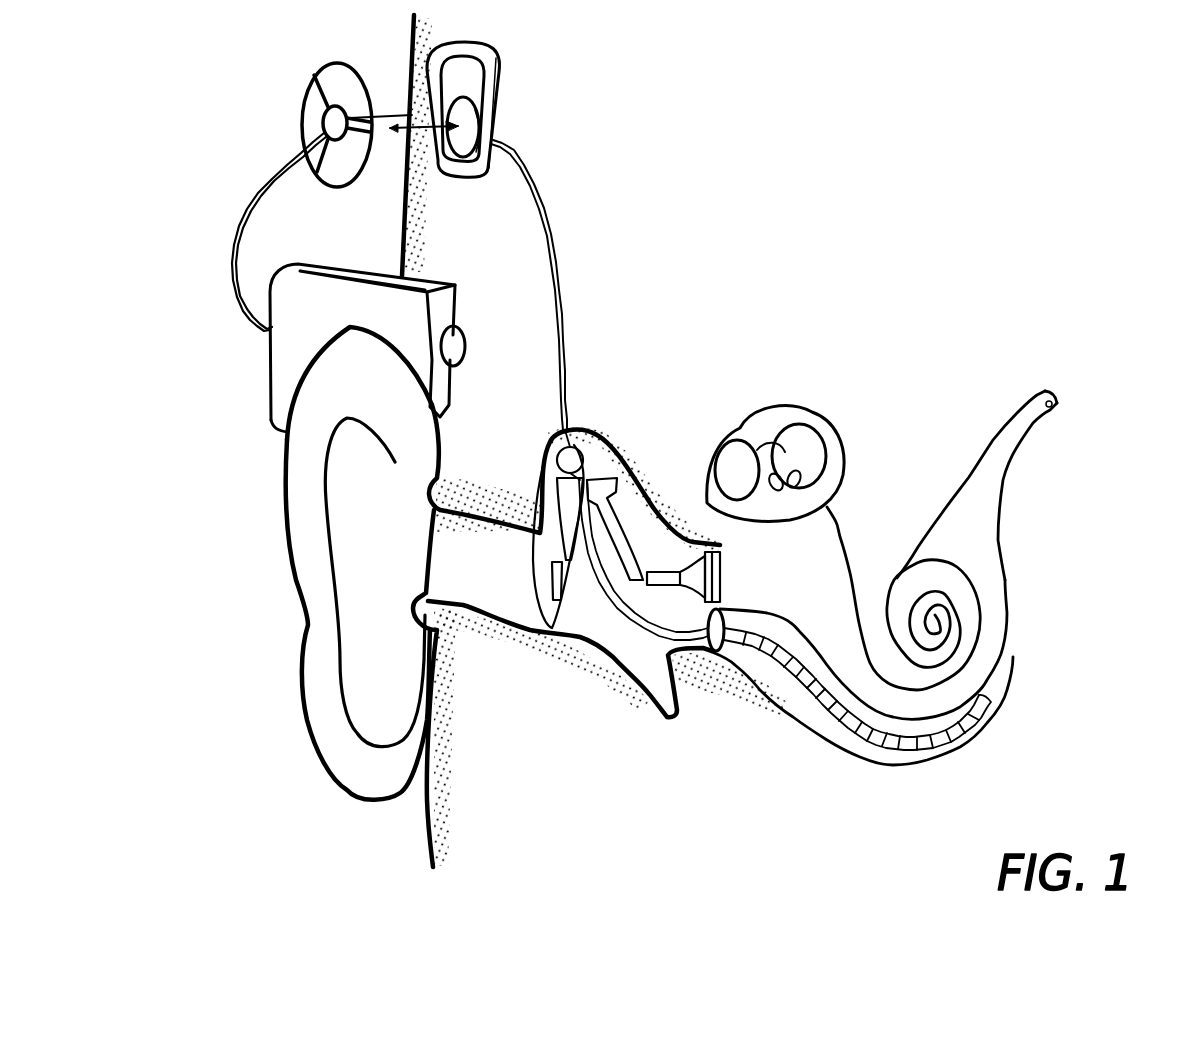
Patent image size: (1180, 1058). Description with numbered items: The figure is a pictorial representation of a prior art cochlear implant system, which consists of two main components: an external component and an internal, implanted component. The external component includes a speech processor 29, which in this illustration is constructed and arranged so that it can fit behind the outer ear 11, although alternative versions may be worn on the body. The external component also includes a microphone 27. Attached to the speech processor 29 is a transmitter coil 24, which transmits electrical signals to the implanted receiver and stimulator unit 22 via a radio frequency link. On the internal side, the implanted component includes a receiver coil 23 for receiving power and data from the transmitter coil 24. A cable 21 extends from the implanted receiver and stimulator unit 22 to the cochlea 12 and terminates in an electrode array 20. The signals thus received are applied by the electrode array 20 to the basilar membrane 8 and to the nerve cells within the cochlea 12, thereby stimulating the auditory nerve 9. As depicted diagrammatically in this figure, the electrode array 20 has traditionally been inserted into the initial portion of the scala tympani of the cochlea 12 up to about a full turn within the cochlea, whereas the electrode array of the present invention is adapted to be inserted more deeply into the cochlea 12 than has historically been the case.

The basilar membrane 8 is at (799, 630).
The auditory nerve 9 is at (982, 488).
The outer ear 11 is at (317, 690).
The cochlea 12 is at (1003, 643).
The electrode array 20 is at (848, 730).
The cable 21 is at (560, 298).
The implanted receiver and stimulator unit 22 is at (481, 143).
The receiver coil 23 is at (488, 92).
The transmitter coil 24 is at (322, 117).
The microphone 27 is at (457, 347).
The speech processor 29 is at (267, 382).